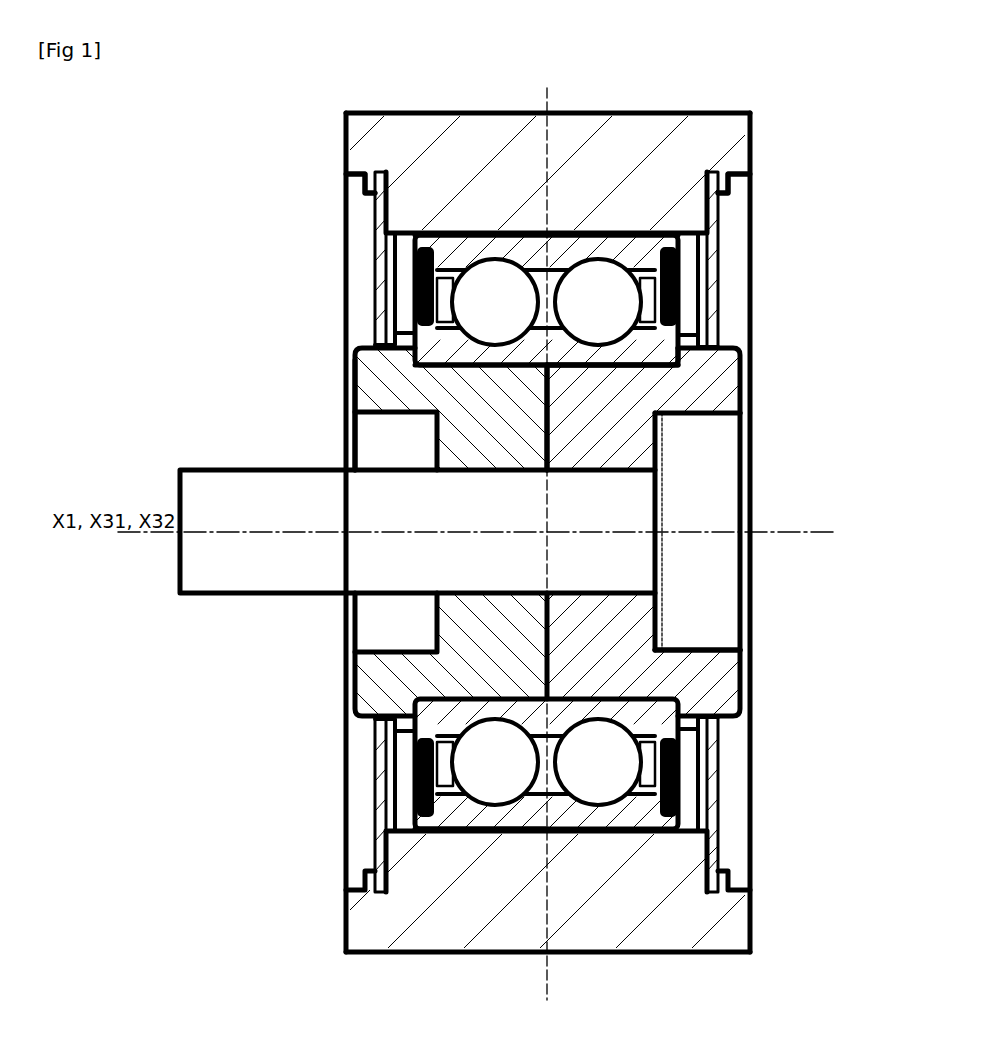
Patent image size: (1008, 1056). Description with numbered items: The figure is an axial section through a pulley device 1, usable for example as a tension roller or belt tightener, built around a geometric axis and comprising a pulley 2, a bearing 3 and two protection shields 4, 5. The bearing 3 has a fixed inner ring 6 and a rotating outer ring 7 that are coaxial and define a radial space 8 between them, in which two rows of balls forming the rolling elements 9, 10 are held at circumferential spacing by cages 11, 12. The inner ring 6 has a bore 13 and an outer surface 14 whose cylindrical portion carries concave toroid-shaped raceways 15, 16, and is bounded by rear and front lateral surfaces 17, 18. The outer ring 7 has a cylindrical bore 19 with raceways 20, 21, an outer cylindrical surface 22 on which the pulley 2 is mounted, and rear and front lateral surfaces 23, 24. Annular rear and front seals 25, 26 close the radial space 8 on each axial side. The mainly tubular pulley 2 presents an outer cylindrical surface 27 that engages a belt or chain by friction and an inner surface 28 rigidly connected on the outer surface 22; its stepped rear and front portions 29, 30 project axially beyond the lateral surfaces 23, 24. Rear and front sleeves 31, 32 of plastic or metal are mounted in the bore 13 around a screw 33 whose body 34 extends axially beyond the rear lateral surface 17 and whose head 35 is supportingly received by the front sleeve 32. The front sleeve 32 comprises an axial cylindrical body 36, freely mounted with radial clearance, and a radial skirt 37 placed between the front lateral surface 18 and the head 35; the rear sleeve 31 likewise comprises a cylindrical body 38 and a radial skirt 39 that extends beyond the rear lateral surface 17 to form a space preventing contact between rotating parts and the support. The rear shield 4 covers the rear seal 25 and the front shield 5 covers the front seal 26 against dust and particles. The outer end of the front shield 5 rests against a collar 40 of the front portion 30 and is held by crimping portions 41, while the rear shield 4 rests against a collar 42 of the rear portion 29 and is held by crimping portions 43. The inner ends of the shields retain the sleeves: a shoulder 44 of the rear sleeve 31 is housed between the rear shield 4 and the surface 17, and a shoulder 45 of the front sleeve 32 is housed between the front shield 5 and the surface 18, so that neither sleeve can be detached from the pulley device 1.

The pulley device 1 is at (165, 610).
The pulley 2 is at (332, 132).
The bearing 3 is at (557, 238).
The rear protection shield 4 is at (405, 245).
The front protection shield 5 is at (690, 245).
The fixed inner ring 6 is at (445, 378).
The rotating outer ring 7 is at (467, 838).
The radial space 8 is at (665, 787).
The rolling elements 9 is at (495, 302).
The rolling elements 10 is at (598, 302).
The cage 11 is at (440, 300).
The cage 12 is at (655, 303).
The bore 13 is at (440, 682).
The outer surface 14 is at (440, 775).
The raceway 15 is at (413, 757).
The raceway 16 is at (665, 758).
The rear lateral surface 17 is at (413, 343).
The front lateral surface 18 is at (718, 340).
The cylindrical bore 19 is at (660, 378).
The raceway 20 is at (682, 797).
The raceway 21 is at (413, 797).
The outer cylindrical surface 22 is at (387, 890).
The rear lateral surface 23 is at (400, 822).
The front lateral surface 24 is at (717, 823).
The rear seal 25 is at (420, 275).
The front seal 26 is at (670, 276).
The outer cylindrical surface 27 is at (375, 112).
The inner surface 28 is at (750, 927).
The rear portion 29 is at (352, 153).
The front portion 30 is at (738, 155).
The rear sleeve 31 is at (374, 642).
The front sleeve 32 is at (716, 642).
The screw 33 is at (750, 572).
The body 34 is at (181, 475).
The head 35 is at (722, 505).
The axial cylindrical body 36 is at (662, 452).
The radial skirt 37 is at (742, 412).
The axial cylindrical body 38 is at (405, 442).
The radial skirt 39 is at (356, 416).
The collar 40 is at (697, 224).
The crimping portions 41 is at (723, 202).
The collar 42 is at (393, 228).
The crimping portions 43 is at (372, 190).
The shoulder 44 is at (402, 723).
The shoulder 45 is at (690, 722).